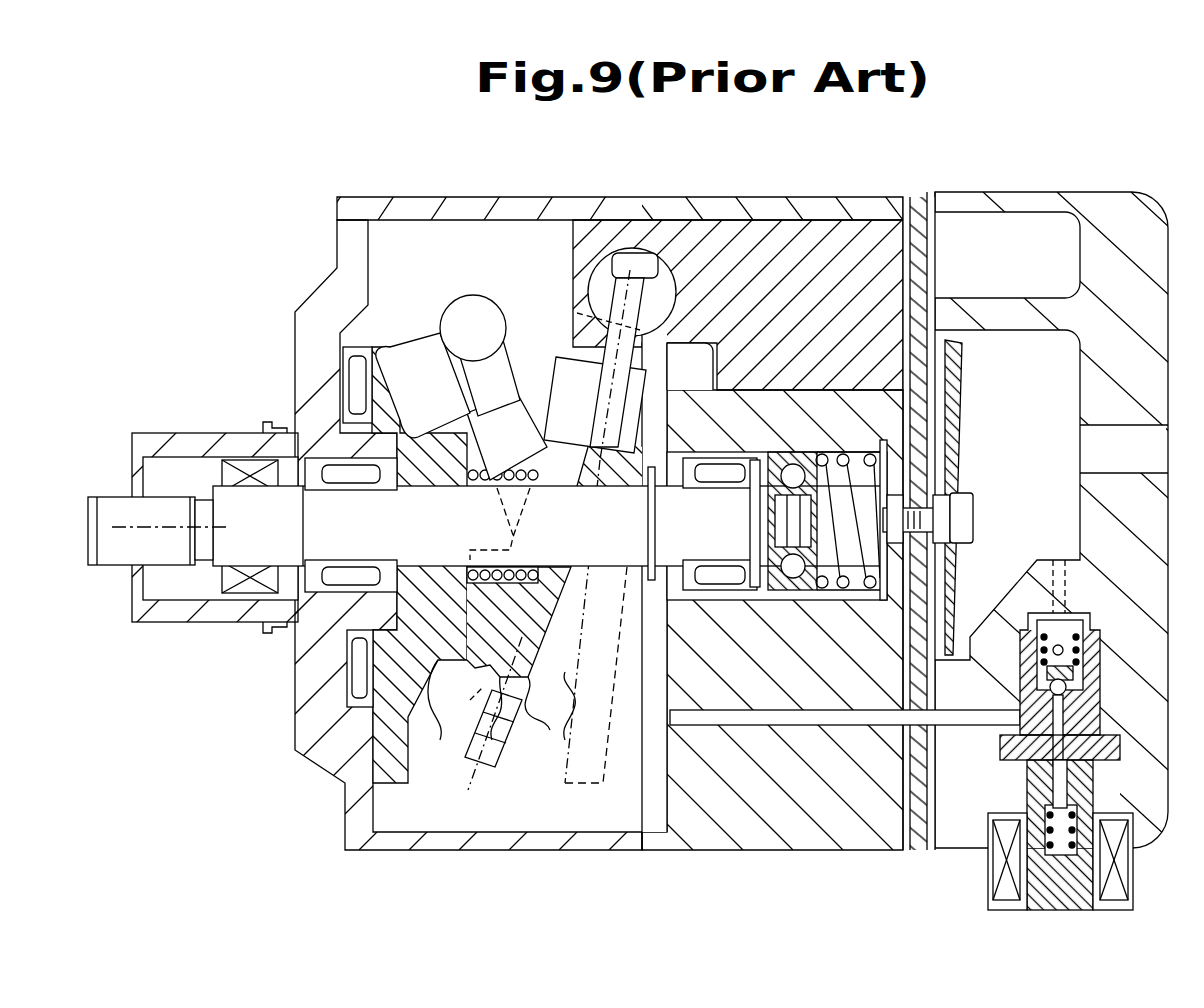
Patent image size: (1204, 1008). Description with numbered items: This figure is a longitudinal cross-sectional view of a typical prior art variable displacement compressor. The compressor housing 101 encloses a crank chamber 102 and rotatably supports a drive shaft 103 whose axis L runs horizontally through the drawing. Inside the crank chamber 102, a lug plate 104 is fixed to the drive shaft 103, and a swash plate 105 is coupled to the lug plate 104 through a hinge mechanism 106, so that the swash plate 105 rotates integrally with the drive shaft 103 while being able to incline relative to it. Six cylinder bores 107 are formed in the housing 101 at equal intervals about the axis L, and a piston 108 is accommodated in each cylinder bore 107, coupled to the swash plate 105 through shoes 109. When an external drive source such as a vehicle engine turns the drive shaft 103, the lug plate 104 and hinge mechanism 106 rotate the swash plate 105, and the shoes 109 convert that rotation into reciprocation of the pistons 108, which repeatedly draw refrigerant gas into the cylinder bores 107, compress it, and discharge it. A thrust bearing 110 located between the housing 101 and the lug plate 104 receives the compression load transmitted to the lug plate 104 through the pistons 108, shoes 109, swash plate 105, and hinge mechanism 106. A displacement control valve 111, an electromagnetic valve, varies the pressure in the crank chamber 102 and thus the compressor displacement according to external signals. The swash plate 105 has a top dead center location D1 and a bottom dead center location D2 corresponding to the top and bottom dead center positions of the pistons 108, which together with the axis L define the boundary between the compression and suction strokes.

The compressor housing 101 is at (642, 850).
The crank chamber 102 is at (547, 821).
The drive shaft 103 is at (110, 567).
The lug plate 104 is at (410, 770).
The swash plate 105 is at (530, 710).
The hinge mechanism 106 is at (456, 298).
The cylinder bore 107 is at (842, 228).
The piston 108 is at (785, 232).
The shoe 109 is at (670, 322).
The thrust bearing 110 is at (358, 708).
The displacement control valve 111 is at (990, 882).
The top dead center location D1 is at (573, 313).
The bottom dead center location D2 is at (470, 700).
The axis L is at (103, 493).